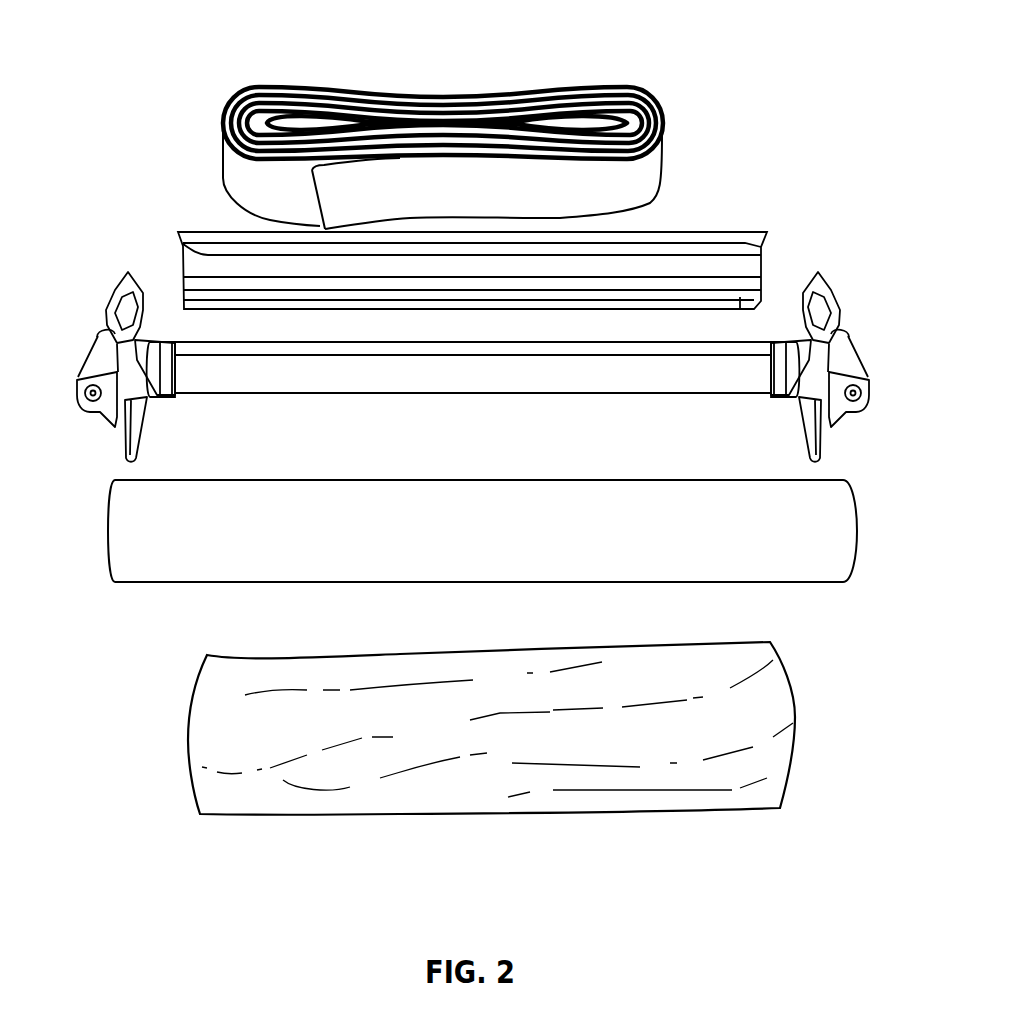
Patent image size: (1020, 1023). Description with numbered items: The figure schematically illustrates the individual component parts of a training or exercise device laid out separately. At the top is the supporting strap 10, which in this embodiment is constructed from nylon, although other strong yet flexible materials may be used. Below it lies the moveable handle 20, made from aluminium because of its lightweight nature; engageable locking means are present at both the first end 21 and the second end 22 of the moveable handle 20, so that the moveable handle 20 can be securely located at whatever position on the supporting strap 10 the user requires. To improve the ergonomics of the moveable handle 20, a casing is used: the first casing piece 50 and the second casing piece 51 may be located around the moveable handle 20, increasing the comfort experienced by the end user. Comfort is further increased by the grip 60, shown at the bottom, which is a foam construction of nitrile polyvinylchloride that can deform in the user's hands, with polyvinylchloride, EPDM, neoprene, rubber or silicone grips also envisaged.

The supporting strap 10 is at (320, 86).
The moveable handle 20 is at (704, 377).
The first end 21 is at (92, 358).
The second end 22 is at (853, 357).
The first casing piece 50 is at (200, 254).
The second casing piece 51 is at (107, 532).
The grip 60 is at (658, 810).